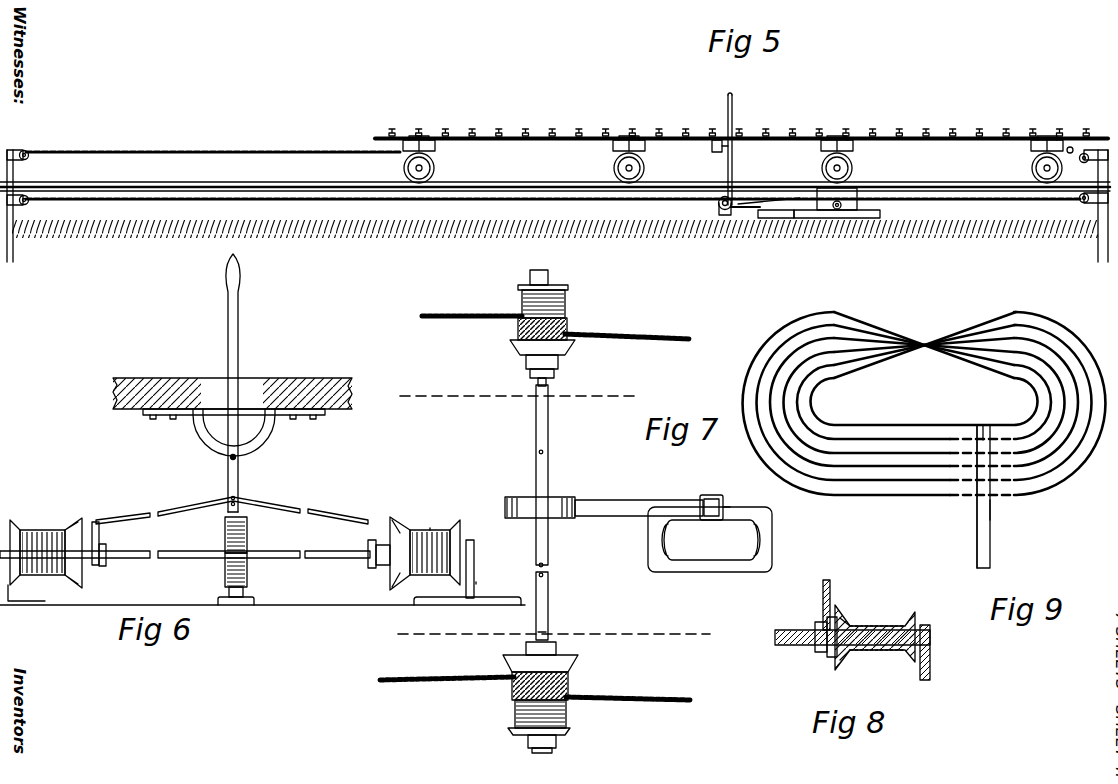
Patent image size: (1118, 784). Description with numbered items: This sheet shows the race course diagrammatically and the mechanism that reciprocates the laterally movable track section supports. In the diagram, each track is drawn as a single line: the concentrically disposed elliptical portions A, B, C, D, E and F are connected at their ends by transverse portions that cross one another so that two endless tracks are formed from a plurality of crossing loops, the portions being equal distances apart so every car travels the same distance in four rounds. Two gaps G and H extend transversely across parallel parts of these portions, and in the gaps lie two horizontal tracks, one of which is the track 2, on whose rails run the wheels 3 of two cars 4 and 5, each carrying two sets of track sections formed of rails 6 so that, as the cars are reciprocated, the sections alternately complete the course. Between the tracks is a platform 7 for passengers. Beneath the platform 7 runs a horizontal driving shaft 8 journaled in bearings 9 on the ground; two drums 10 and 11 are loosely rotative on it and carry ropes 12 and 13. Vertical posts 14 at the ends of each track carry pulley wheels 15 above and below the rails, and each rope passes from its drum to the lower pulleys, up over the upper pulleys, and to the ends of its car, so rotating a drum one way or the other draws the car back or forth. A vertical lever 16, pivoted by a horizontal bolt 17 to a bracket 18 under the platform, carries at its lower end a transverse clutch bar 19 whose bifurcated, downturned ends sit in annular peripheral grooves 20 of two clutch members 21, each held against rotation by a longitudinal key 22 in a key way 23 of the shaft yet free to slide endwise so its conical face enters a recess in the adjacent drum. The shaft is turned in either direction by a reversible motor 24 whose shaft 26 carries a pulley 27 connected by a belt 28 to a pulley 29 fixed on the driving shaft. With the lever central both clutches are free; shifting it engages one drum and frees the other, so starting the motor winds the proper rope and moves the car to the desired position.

In FIG. 5, the horizontal track 2 is at (510, 181).
In FIG. 5, the wheels 3 is at (434, 167).
In FIG. 7, the car 4 is at (472, 395).
In FIG. 5, the car 5 is at (663, 135).
In FIG. 7, the car 5 is at (652, 633).
In FIG. 5, the rails 6 is at (512, 129).
In FIG. 7, the rails 6 is at (540, 753).
In FIG. 6, the platform 7 is at (320, 378).
In FIG. 9, the platform 7 is at (976, 540).
In FIG. 5, the driving shaft 8 is at (718, 206).
In FIG. 6, the driving shaft 8 is at (314, 550).
In FIG. 7, the driving shaft 8 is at (548, 430).
In FIG. 8, the driving shaft 8 is at (780, 646).
In FIG. 5, the bearings 9 is at (725, 216).
In FIG. 6, the bearings 9 is at (34, 601).
In FIG. 7, the bearings 9 is at (484, 573).
In FIG. 8, the bearings 9 is at (931, 655).
In FIG. 6, the drum 10 is at (42, 528).
In FIG. 5, the drum 11 is at (742, 197).
In FIG. 6, the drum 11 is at (430, 529).
In FIG. 7, the drum 11 is at (438, 510).
In FIG. 8, the drum 11 is at (882, 614).
In FIG. 7, the rope 12 is at (628, 340).
In FIG. 5, the rope 13 is at (281, 151).
In FIG. 7, the rope 13 is at (628, 696).
In FIG. 5, the vertical posts 14 is at (12, 150).
In FIG. 5, the pulley wheels 15 is at (30, 197).
In FIG. 5, the vertical lever 16 is at (733, 100).
In FIG. 6, the vertical lever 16 is at (228, 321).
In FIG. 9, the vertical lever 16 is at (991, 520).
In FIG. 6, the horizontal bolt 17 is at (240, 458).
In FIG. 5, the bracket 18 is at (714, 151).
In FIG. 6, the bracket 18 is at (284, 378).
In FIG. 6, the clutch bar 19 is at (328, 508).
In FIG. 7, the clutch bar 19 is at (534, 386).
In FIG. 8, the clutch bar 19 is at (823, 596).
In FIG. 6, the annular peripheral grooves 20 is at (104, 544).
In FIG. 6, the clutch members 21 is at (98, 522).
In FIG. 8, the clutch members 21 is at (846, 605).
In FIG. 8, the longitudinal key 22 is at (824, 652).
In FIG. 8, the key way 23 is at (816, 654).
In FIG. 5, the motor 24 is at (850, 219).
In FIG. 6, the motor 24 is at (262, 563).
In FIG. 7, the motor 24 is at (710, 539).
In FIG. 7, the motor shaft 26 is at (712, 495).
In FIG. 7, the pulley 27 is at (724, 505).
In FIG. 5, the belt 28 is at (776, 219).
In FIG. 6, the belt 28 is at (225, 531).
In FIG. 7, the belt 28 is at (605, 500).
In FIG. 6, the pulley 29 is at (225, 567).
In FIG. 7, the pulley 29 is at (562, 497).
In FIG. 9, the track portion A is at (858, 428).
In FIG. 9, the track portion B is at (880, 439).
In FIG. 9, the track portion C is at (898, 453).
In FIG. 9, the track portion D is at (846, 478).
In FIG. 9, the track portion E is at (872, 491).
In FIG. 9, the track portion F is at (902, 492).
In FIG. 9, the gap G is at (966, 498).
In FIG. 9, the gap H is at (996, 500).